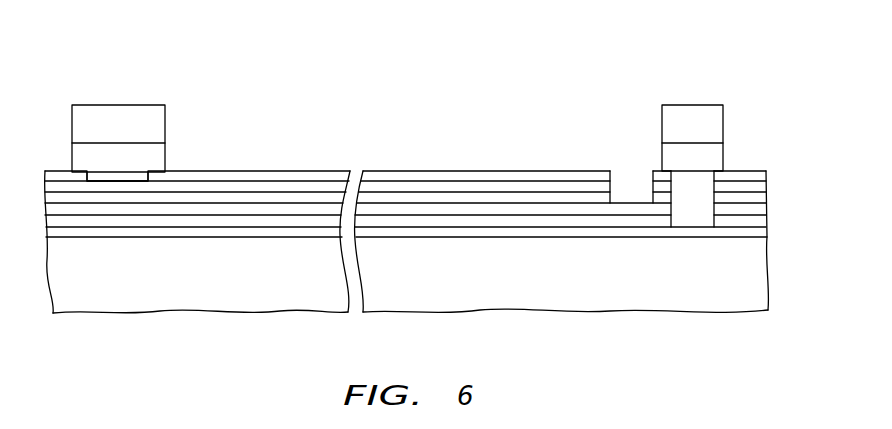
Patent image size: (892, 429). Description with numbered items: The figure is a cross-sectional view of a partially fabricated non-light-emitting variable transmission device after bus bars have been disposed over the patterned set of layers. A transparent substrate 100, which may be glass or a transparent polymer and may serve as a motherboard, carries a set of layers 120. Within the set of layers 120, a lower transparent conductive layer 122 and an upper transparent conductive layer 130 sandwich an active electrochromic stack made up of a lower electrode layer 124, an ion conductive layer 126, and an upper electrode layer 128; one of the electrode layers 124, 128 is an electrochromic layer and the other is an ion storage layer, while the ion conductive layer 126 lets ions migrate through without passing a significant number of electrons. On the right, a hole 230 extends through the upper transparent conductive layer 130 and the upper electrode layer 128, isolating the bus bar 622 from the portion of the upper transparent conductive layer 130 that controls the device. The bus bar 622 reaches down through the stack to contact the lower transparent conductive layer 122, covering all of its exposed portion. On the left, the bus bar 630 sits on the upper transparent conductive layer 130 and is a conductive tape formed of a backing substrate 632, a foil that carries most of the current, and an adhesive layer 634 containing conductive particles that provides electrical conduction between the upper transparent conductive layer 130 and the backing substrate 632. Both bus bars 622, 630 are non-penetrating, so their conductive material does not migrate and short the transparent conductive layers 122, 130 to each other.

The transparent substrate 100 is at (747, 283).
The set of layers 120 is at (773, 172).
The lower transparent conductive layer 122 is at (88, 230).
The lower electrode layer 124 is at (158, 223).
The ion conductive layer 126 is at (263, 210).
The upper electrode layer 128 is at (242, 200).
The upper transparent conductive layer 130 is at (300, 188).
The hole 230 is at (635, 168).
The bus bar 622 is at (699, 95).
The bus bar 630 is at (435, 104).
The backing substrate 632 is at (137, 137).
The adhesive layer 634 is at (137, 175).